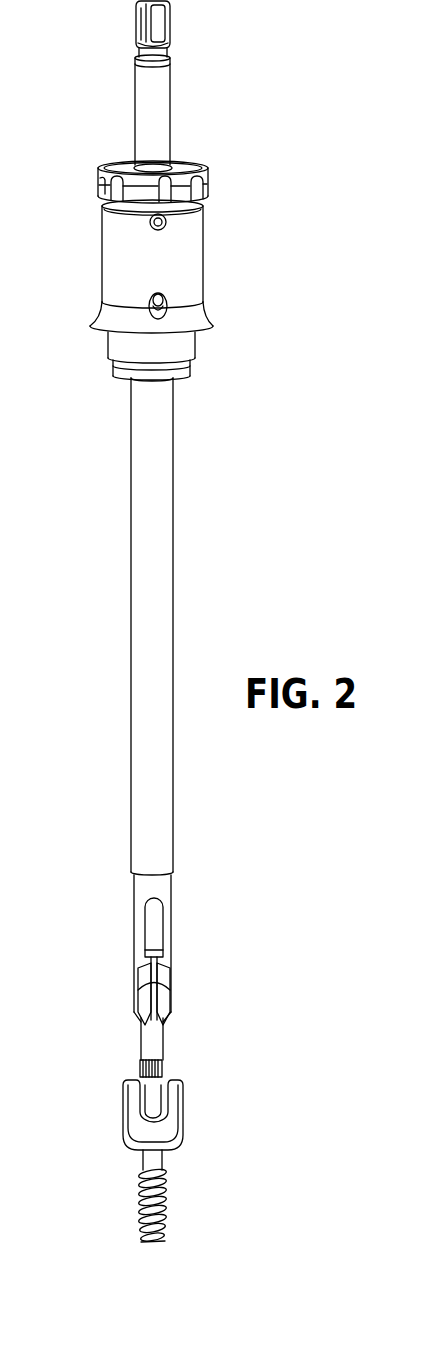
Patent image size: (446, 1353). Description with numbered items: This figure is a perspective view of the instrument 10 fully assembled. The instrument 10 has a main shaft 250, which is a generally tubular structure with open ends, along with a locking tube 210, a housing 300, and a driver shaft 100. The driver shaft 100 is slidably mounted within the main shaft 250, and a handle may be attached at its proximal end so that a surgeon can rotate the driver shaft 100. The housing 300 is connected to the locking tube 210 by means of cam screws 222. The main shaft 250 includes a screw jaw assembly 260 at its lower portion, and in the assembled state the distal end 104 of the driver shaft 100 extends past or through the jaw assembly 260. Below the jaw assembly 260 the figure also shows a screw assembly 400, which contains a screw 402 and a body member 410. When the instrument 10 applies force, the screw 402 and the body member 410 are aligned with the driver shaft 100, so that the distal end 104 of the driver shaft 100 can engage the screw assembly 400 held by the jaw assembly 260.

The instrument 10 is at (294, 261).
The driver shaft 100 is at (172, 111).
The housing 300 is at (205, 261).
The cam screws 222 is at (157, 231).
The main shaft 250 is at (174, 613).
The locking tube 210 is at (165, 944).
The screw jaw assembly 260 is at (175, 1006).
The distal end 104 is at (163, 1068).
The screw assembly 400 is at (178, 1172).
The body member 410 is at (140, 1122).
The screw 402 is at (138, 1212).